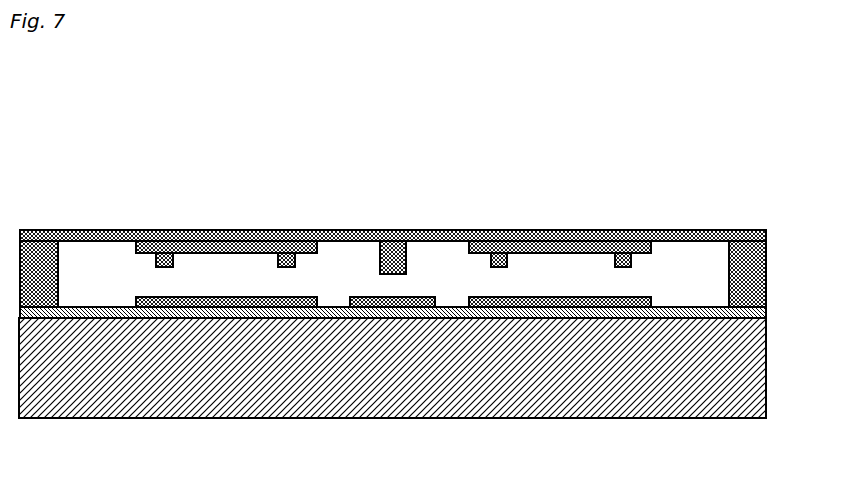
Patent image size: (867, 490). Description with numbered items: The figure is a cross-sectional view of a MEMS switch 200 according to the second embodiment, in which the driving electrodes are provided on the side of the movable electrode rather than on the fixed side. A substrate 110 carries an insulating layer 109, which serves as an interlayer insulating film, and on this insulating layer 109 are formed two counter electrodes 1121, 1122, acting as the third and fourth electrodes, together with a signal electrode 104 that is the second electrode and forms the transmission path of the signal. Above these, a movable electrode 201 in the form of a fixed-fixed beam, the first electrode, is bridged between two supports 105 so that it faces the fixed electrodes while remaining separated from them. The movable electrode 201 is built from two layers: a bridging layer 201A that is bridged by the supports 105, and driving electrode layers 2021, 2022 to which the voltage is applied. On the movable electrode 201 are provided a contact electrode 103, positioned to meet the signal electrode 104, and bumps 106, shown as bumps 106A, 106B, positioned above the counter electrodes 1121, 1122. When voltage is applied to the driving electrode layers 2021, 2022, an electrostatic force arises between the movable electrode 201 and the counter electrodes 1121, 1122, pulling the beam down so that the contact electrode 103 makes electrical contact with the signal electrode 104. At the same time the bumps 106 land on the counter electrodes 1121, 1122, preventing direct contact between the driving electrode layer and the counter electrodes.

The MEMS switch 200 is at (123, 86).
The movable electrode 201 is at (333, 233).
The bridging layer 201A is at (358, 238).
The driving electrode layer 2021 is at (143, 245).
The driving electrode layer 2022 is at (646, 245).
The contact electrode 103 is at (393, 255).
The support 105 is at (40, 275).
The bumps 106 is at (401, 174).
The bump 106A is at (165, 260).
The bump 106B is at (288, 258).
The insulating layer 109 is at (148, 320).
The substrate 110 is at (667, 382).
The counter electrode 1121 is at (231, 312).
The signal electrode 104 is at (397, 313).
The counter electrode 1122 is at (535, 313).